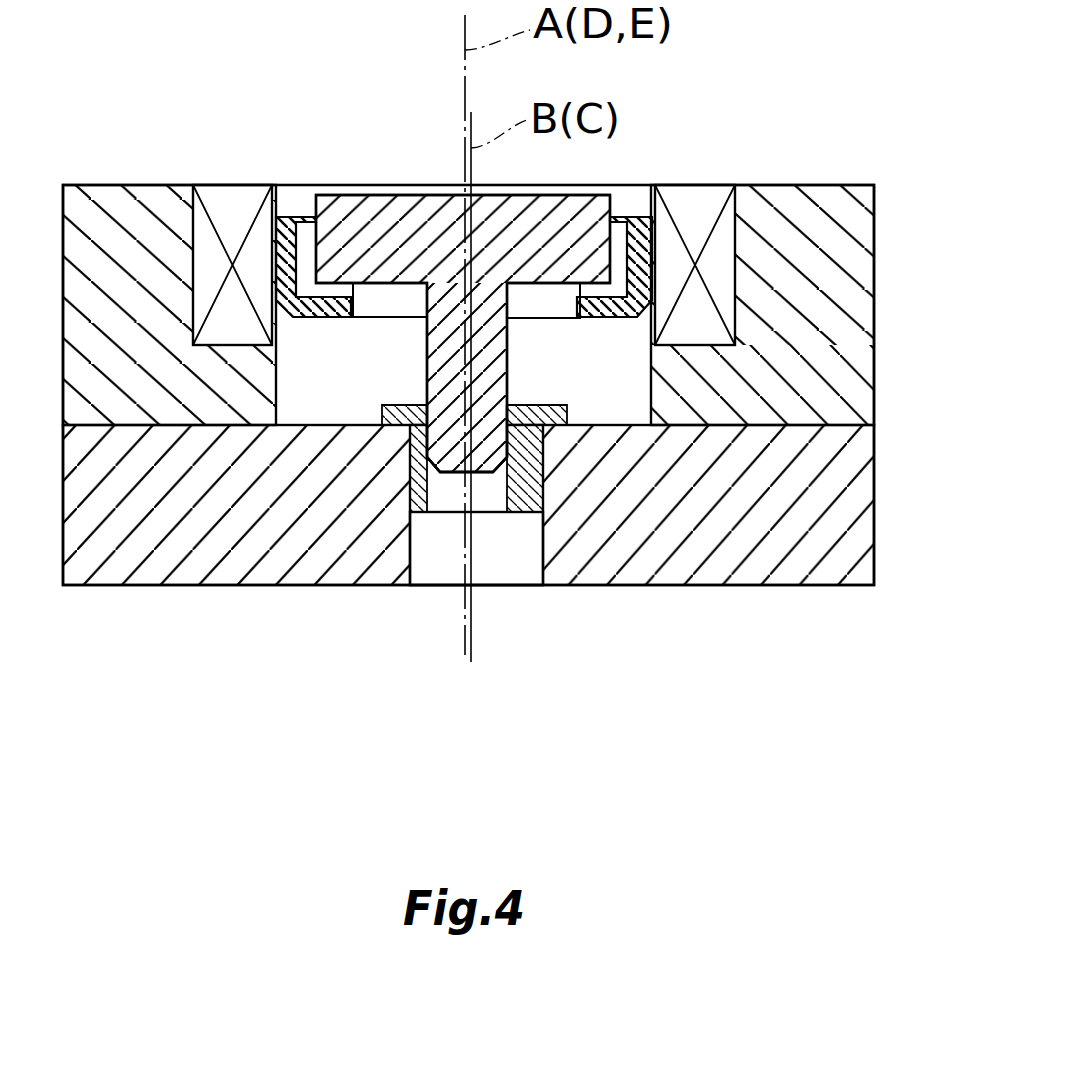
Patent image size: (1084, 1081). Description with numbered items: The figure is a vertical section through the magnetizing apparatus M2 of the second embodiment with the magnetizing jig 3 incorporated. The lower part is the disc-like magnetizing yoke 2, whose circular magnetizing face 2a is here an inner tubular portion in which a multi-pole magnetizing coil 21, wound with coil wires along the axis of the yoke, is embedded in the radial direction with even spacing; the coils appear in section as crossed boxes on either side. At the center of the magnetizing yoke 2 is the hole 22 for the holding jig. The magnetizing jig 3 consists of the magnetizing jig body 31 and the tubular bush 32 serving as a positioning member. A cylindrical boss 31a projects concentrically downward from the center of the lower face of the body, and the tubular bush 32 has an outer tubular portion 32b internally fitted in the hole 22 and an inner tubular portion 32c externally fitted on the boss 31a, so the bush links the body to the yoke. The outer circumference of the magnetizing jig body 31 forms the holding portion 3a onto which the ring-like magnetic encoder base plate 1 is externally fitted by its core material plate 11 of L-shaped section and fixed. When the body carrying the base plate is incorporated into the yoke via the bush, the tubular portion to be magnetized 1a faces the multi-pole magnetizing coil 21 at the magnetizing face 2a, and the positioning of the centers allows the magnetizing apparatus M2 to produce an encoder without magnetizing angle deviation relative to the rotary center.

The ring-like magnetic encoder base plate 1 is at (293, 213).
The tubular portion to be magnetized 1a is at (240, 216).
The ring-like core material plate 11 is at (624, 216).
The magnetizing yoke 2 is at (868, 502).
The circular magnetizing face 2a is at (652, 363).
The multi-pole magnetizing coil 21 is at (707, 205).
The hole for holding jig 22 is at (547, 528).
The magnetizing jig 3 is at (457, 257).
The holding portion of the magnetic encoder base plate 3a is at (304, 318).
The magnetizing jig body 31 is at (428, 215).
The cylindrical boss 31a is at (507, 371).
The tubular bush 32 is at (403, 404).
The outer tubular portion 32b is at (548, 465).
The inner tubular portion 32c is at (432, 488).
The magnetizing apparatus M2 is at (818, 152).